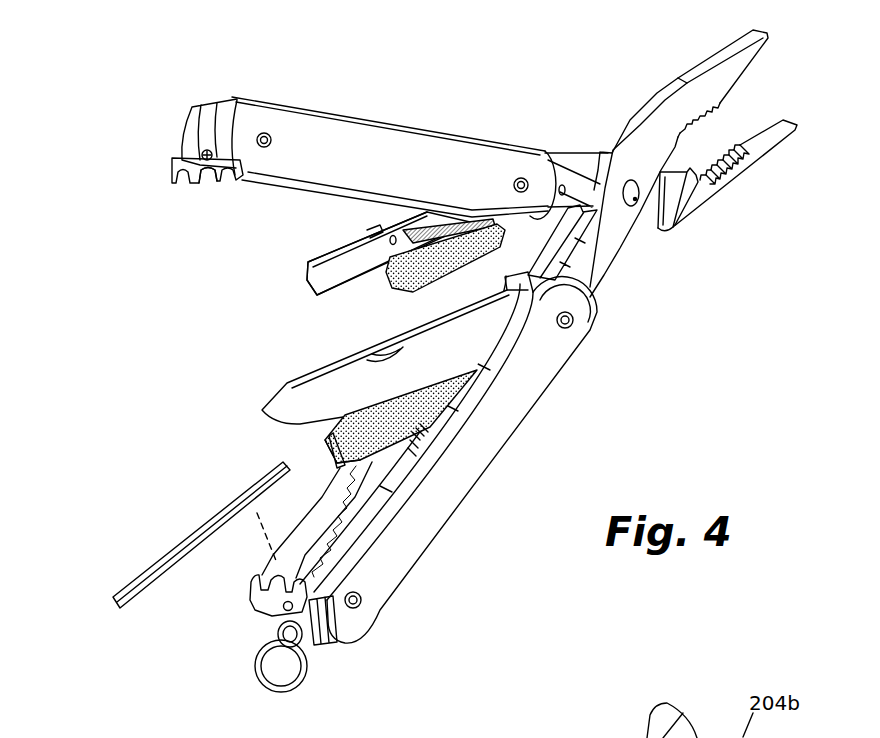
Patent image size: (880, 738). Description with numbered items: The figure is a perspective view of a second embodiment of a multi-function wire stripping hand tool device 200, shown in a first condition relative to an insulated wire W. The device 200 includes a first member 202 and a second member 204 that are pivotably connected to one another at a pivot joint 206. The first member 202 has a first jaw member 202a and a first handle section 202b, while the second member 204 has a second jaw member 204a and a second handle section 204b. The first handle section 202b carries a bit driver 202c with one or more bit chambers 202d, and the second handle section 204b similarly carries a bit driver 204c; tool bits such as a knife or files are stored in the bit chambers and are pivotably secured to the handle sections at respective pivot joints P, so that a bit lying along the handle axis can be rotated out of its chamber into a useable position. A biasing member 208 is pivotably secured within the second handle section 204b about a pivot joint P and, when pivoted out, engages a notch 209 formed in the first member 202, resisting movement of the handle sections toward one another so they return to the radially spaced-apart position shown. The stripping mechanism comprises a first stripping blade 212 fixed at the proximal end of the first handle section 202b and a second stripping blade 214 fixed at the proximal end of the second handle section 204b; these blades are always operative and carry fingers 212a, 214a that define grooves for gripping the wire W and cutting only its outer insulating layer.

The multi-function wire stripping hand tool device 200 is at (505, 72).
The first member 202 is at (613, 243).
The first jaw member 202a is at (712, 82).
The first handle section 202b is at (405, 552).
The bit driver 202c is at (318, 477).
The bit chamber 202d is at (380, 483).
The second member 204 is at (587, 152).
The second jaw member 204a is at (747, 177).
The second handle section 204b is at (263, 120).
The bit driver 204c is at (170, 116).
The pivot joint 206 is at (640, 203).
The biasing member 208 is at (568, 186).
The notch 209 is at (567, 220).
The first stripping blade 212 is at (262, 597).
The fingers 212a is at (327, 617).
The second stripping blade 214 is at (172, 166).
The fingers 214a is at (213, 185).
The pivot joint P is at (517, 180).
The wire W is at (153, 580).